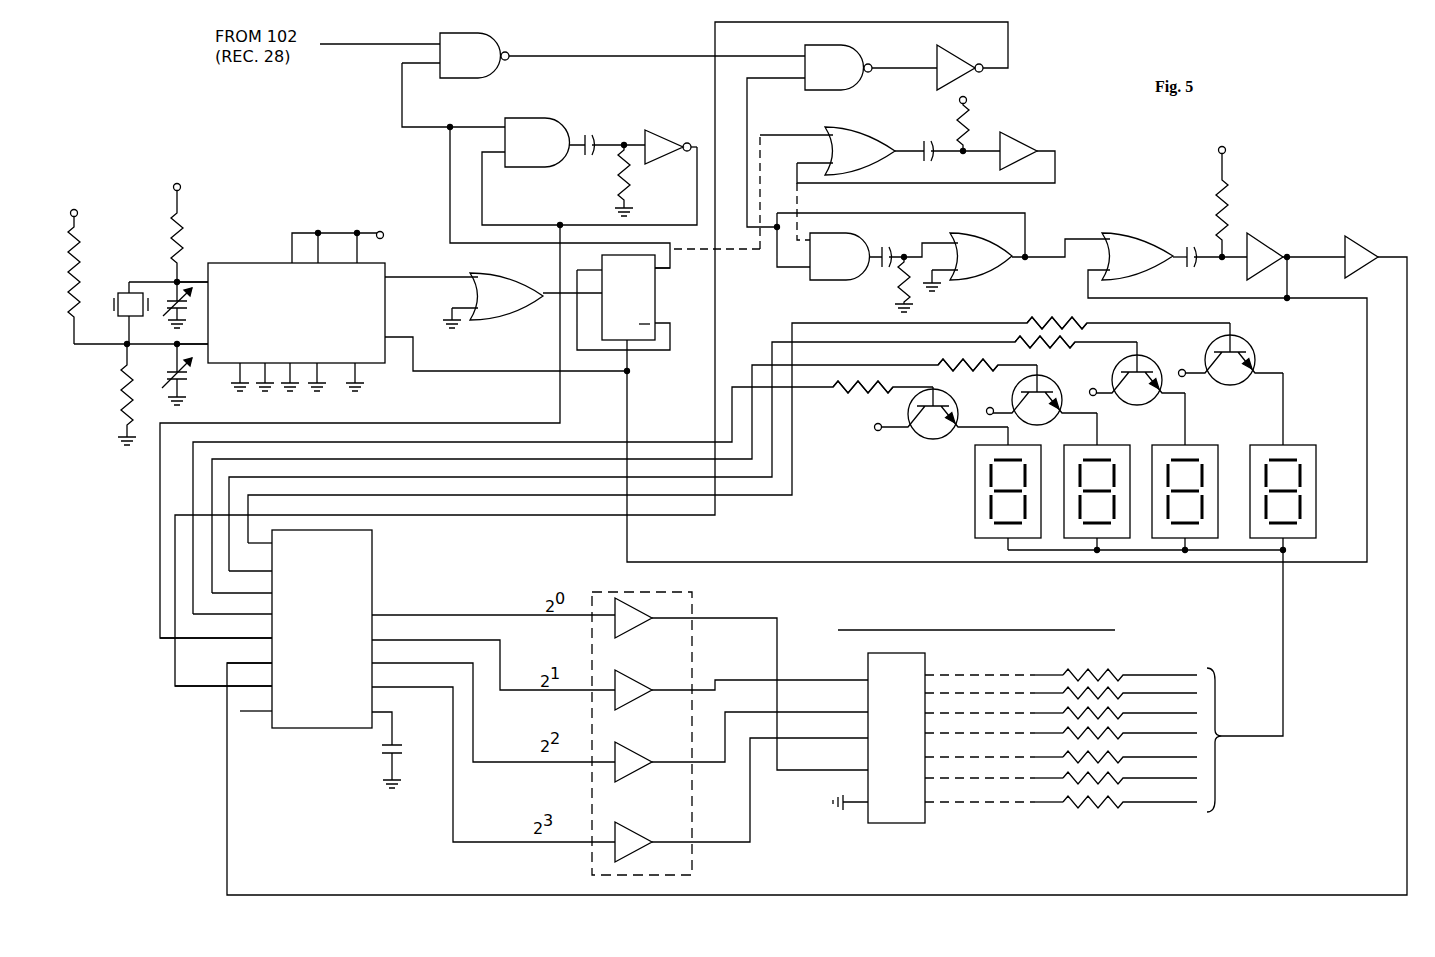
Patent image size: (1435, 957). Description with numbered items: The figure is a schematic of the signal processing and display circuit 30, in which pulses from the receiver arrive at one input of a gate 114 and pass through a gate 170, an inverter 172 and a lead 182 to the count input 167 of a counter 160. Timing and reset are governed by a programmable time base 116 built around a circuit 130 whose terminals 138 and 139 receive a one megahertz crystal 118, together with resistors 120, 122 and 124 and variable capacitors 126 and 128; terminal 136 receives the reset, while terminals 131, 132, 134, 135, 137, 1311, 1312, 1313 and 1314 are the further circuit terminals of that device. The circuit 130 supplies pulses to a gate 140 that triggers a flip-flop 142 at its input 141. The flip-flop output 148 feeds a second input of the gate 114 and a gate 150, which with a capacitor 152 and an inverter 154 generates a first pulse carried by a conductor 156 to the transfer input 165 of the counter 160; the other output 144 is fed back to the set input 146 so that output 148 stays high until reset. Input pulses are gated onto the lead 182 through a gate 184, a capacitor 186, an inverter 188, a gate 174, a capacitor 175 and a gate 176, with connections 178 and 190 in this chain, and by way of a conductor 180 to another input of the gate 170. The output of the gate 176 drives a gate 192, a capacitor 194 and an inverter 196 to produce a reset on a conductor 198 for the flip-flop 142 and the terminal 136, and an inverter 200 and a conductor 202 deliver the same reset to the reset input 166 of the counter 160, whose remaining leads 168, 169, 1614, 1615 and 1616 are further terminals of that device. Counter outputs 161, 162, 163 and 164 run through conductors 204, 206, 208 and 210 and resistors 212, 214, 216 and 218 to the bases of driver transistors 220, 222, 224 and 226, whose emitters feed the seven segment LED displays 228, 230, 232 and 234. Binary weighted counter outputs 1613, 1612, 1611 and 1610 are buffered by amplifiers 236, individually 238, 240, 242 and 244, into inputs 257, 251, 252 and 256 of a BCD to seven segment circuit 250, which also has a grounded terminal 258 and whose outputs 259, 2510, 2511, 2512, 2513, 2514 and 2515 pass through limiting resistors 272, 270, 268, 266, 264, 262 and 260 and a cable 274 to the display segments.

The gate 114 is at (488, 48).
The programmable time base 116 is at (300, 217).
The crystal 118 is at (115, 298).
The resistor 120 is at (76, 264).
The resistor 122 is at (180, 240).
The resistor 124 is at (125, 396).
The variable capacitor 126 is at (168, 312).
The variable capacitor 128 is at (168, 376).
The circuit 130 is at (313, 320).
The output pin 131 is at (385, 277).
The ground pin 132 is at (240, 362).
The ground pin 134 is at (265, 362).
The ground pin 135 is at (290, 362).
The terminal 136 is at (387, 337).
The supply pin 137 is at (293, 268).
The terminal 138 is at (206, 352).
The terminal 139 is at (206, 282).
The ground pin 1311 is at (317, 362).
The supply pin 1312 is at (320, 263).
The supply pin 1313 is at (357, 265).
The ground pin 1314 is at (355, 362).
The gate 140 is at (522, 301).
The input 141 is at (600, 300).
The flip-flop 142 is at (640, 306).
The output 144 is at (656, 323).
The set input 146 is at (602, 265).
The output 148 is at (656, 270).
The gate 150 is at (520, 122).
The capacitor 152 is at (586, 132).
The inverter 154 is at (657, 130).
The conductor 156 is at (558, 387).
The counter 160 is at (311, 728).
The output 161 is at (272, 543).
The output 162 is at (250, 563).
The output 163 is at (242, 585).
The output 164 is at (232, 606).
The transfer input 165 is at (216, 630).
The reset input 166 is at (249, 655).
The count input 167 is at (223, 678).
The pin 168 is at (254, 702).
The pin 169 is at (388, 741).
The counter output 1610 is at (493, 756).
The counter output 1611 is at (493, 704).
The counter output 1612 is at (493, 656).
The counter output 1613 is at (493, 607).
The VDD pin 1614 is at (419, 587).
The VGG pin 1615 is at (419, 565).
The VSS pin 1616 is at (415, 543).
The gate 170 is at (850, 72).
The inverter 172 is at (958, 60).
The gate 174 is at (825, 275).
The capacitor 175 is at (892, 245).
The gate 176 is at (990, 272).
The feedback line 178 is at (945, 213).
The conductor 180 is at (747, 122).
The lead 182 is at (712, 38).
The gate 184 is at (858, 138).
The capacitor 186 is at (927, 140).
The inverter 188 is at (1018, 140).
The feedback line 190 is at (855, 183).
The gate 192 is at (1135, 238).
The capacitor 194 is at (1190, 247).
The inverter 196 is at (1270, 240).
The conductor 198 is at (628, 420).
The inverter 200 is at (1355, 235).
The conductor 202 is at (1412, 265).
The conductor 204 is at (370, 497).
The conductor 206 is at (455, 480).
The conductor 208 is at (520, 462).
The conductor 210 is at (608, 445).
The resistor 212 is at (1022, 323).
The resistor 214 is at (1038, 343).
The resistor 216 is at (942, 365).
The resistor 218 is at (868, 389).
The driver transistor 220 is at (1235, 385).
The driver transistor 222 is at (1152, 398).
The driver transistor 224 is at (1045, 418).
The driver transistor 226 is at (925, 440).
The LED display 228 is at (1318, 460).
The LED display 230 is at (1222, 460).
The LED display 232 is at (1130, 460).
The LED display 234 is at (1040, 470).
The amplifiers 236 is at (692, 600).
The amplifier 238 is at (632, 638).
The amplifier 240 is at (633, 708).
The amplifier 242 is at (632, 778).
The amplifier 244 is at (632, 834).
The circuit 250 is at (886, 824).
The input 251 is at (842, 671).
The input 252 is at (839, 703).
The input 256 is at (839, 730).
The input 257 is at (841, 762).
The ground pin 258 is at (849, 794).
The output 259 is at (994, 794).
The output 2510 is at (994, 770).
The output 2511 is at (994, 749).
The output 2512 is at (994, 725).
The output 2513 is at (994, 705).
The output 2514 is at (994, 685).
The output 2515 is at (994, 667).
The limiting resistor 260 is at (1128, 678).
The limiting resistor 262 is at (1128, 696).
The limiting resistor 264 is at (1128, 716).
The limiting resistor 266 is at (1128, 736).
The limiting resistor 268 is at (1128, 760).
The limiting resistor 270 is at (1128, 781).
The limiting resistor 272 is at (1128, 805).
The cable 274 is at (1283, 612).
The signal processing and display 30 is at (976, 611).